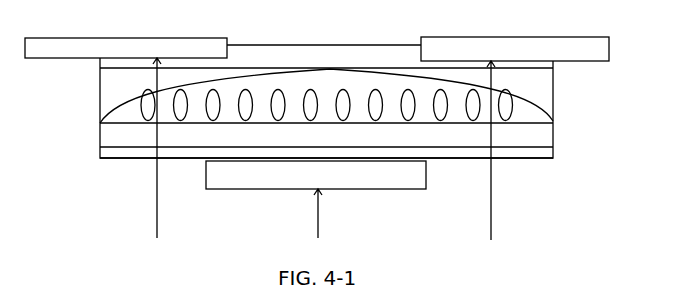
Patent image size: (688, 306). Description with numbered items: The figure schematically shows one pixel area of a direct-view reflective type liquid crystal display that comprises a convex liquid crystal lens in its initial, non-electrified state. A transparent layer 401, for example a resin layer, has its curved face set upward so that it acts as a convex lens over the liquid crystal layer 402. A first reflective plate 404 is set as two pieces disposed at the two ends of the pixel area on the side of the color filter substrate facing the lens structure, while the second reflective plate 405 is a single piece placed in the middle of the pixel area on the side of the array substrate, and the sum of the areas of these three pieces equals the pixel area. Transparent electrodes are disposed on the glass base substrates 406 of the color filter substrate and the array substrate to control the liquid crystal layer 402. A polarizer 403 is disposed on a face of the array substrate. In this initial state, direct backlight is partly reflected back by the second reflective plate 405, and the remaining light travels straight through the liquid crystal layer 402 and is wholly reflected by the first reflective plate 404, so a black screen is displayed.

The transparent layer 401 is at (111, 96).
The liquid crystal layer 402 is at (135, 112).
The polarizer 403 is at (115, 153).
The first reflective plate 404 is at (58, 47).
The second reflective plate 405 is at (230, 183).
The base substrate 406 is at (347, 50).